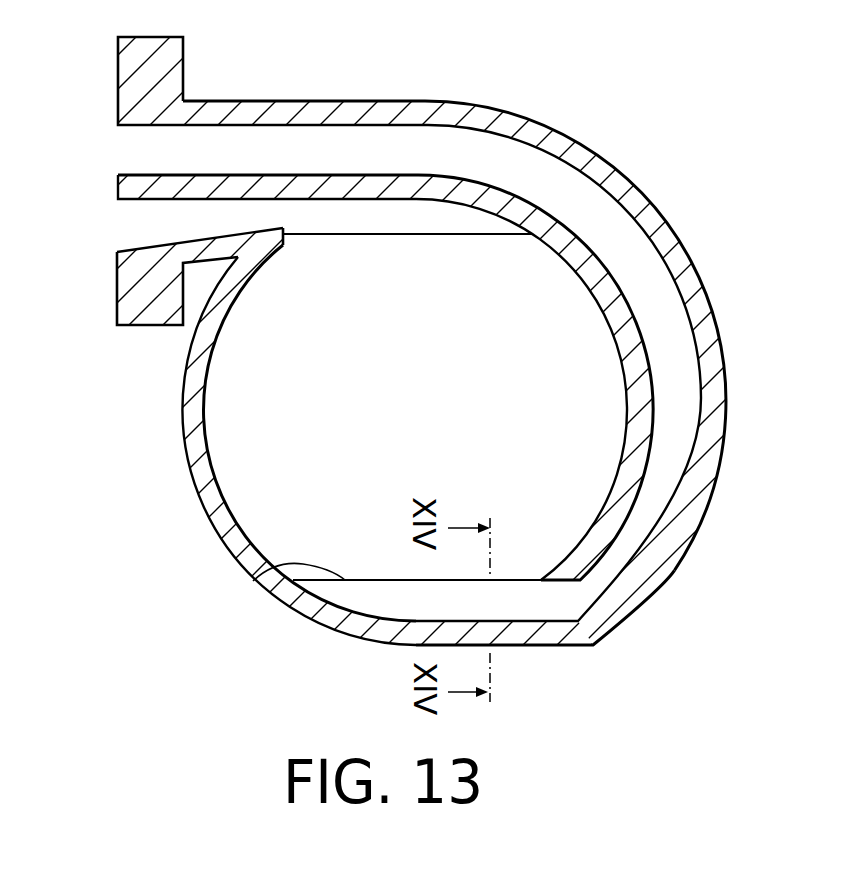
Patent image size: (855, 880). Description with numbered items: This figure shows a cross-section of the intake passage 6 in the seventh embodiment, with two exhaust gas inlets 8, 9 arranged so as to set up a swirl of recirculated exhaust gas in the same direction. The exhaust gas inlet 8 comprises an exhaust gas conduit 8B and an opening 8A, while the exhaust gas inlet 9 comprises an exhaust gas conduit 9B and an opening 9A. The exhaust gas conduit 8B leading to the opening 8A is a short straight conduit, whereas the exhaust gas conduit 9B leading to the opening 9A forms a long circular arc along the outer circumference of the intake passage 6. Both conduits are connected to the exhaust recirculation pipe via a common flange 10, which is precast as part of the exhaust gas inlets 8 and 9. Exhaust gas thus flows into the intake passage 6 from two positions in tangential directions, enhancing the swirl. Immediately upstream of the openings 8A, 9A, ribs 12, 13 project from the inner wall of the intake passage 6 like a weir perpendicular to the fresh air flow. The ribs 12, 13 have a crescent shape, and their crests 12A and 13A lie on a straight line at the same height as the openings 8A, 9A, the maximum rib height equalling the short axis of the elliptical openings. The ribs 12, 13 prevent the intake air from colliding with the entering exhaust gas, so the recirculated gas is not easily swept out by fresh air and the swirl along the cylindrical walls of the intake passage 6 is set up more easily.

The intake passage 6 is at (245, 480).
The exhaust gas inlet 8 is at (238, 213).
The opening 8A is at (287, 219).
The exhaust gas conduit 8B is at (218, 223).
The exhaust gas inlet 9 is at (709, 500).
The opening 9A is at (550, 602).
The exhaust gas conduit 9B is at (643, 258).
The common flange 10 is at (128, 72).
The rib 12 is at (407, 216).
The crest 12A is at (498, 235).
The rib 13 is at (388, 593).
The crest 13A is at (253, 580).